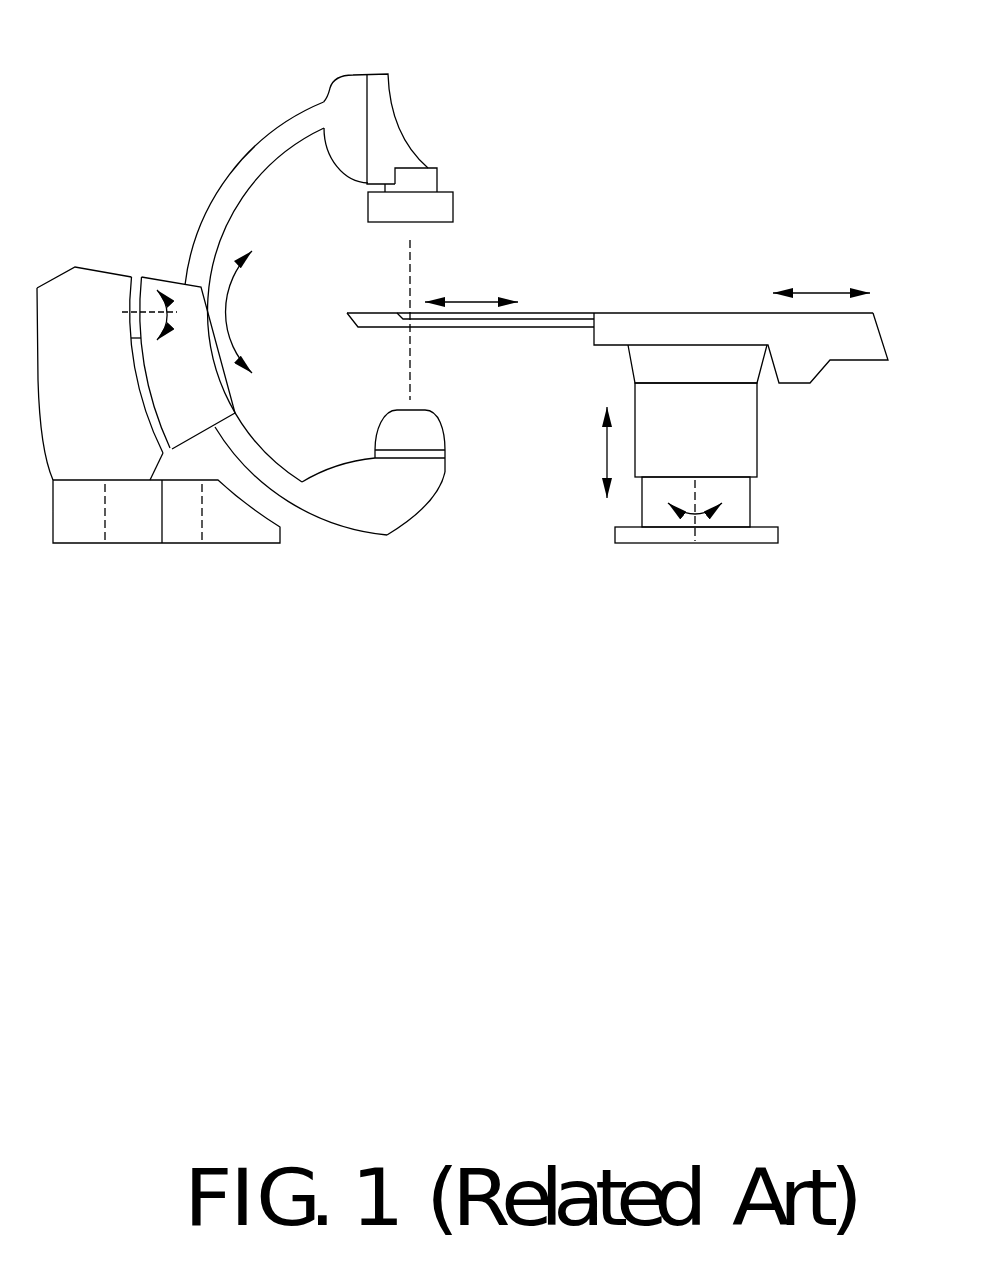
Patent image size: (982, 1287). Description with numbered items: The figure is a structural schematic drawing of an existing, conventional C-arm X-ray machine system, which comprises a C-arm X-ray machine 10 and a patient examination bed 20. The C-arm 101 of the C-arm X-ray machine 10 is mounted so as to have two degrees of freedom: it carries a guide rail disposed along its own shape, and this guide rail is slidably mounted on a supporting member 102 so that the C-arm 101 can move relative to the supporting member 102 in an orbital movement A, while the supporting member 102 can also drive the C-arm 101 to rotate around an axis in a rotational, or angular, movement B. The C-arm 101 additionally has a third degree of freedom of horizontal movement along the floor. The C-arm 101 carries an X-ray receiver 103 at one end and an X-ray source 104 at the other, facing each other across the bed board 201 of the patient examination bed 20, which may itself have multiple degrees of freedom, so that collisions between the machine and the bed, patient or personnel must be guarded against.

The C-arm X-ray machine 10 is at (310, 102).
The C-arm 101 is at (238, 192).
The supporting member 102 is at (178, 295).
The X-ray receiver 103 is at (422, 167).
The X-ray source 104 is at (413, 450).
The patient examination bed 20 is at (638, 296).
The bed board 201 is at (512, 322).